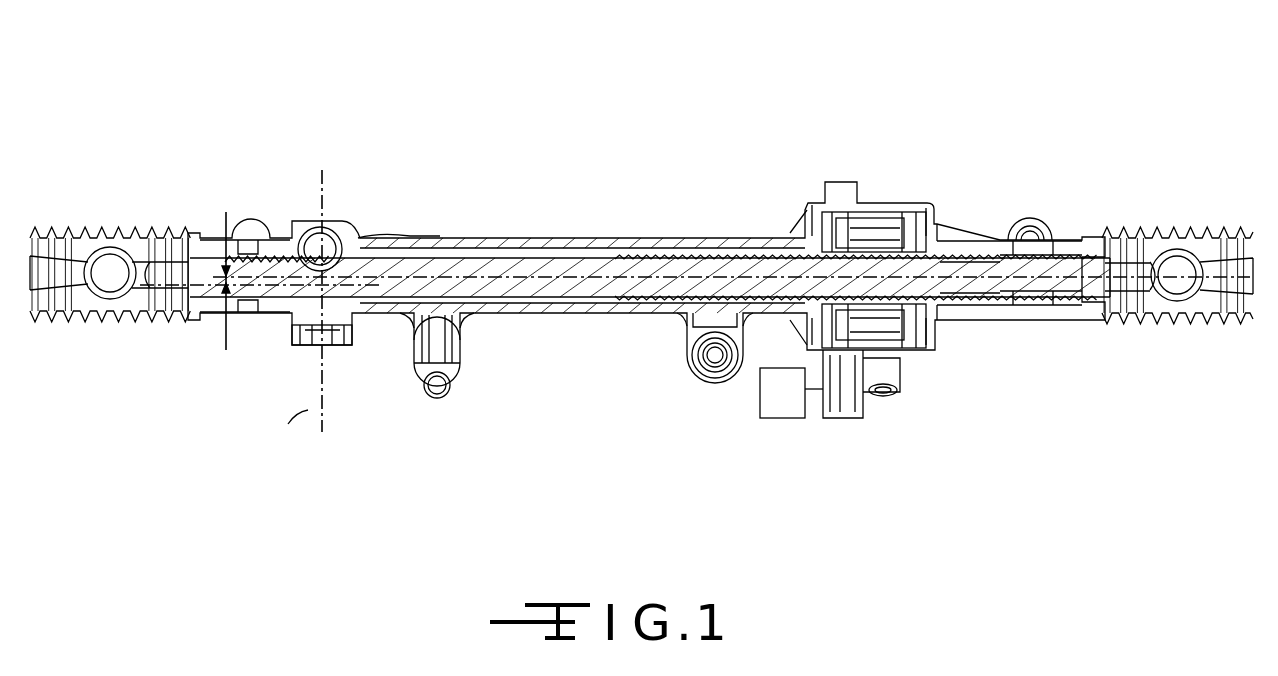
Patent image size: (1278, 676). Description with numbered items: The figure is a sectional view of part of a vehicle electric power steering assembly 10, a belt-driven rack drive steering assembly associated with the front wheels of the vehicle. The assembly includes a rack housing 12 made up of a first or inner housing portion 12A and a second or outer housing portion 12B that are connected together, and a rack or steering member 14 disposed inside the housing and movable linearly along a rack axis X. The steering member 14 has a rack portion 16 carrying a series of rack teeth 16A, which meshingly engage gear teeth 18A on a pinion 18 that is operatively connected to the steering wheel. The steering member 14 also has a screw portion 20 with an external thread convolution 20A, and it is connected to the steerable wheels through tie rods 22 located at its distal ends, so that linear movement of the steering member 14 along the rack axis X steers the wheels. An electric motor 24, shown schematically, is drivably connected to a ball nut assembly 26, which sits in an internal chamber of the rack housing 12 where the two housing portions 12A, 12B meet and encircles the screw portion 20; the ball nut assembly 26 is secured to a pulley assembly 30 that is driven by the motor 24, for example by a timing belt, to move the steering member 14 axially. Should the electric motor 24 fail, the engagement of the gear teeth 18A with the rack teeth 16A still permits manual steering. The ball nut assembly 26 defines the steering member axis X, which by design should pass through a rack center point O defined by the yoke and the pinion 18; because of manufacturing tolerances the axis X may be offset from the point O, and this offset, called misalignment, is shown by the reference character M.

The vehicle electric power steering assembly 10 is at (521, 122).
The rack housing 12 is at (500, 234).
The first housing portion 12A is at (590, 240).
The second housing portion 12B is at (915, 205).
The steering member 14 is at (520, 302).
The rack portion 16 is at (272, 280).
The rack teeth 16A is at (410, 244).
The pinion 18 is at (318, 240).
The gear teeth 18A is at (316, 300).
The screw portion 20 is at (1000, 287).
The external thread convolution 20A is at (950, 302).
The tie rods 22 is at (112, 262).
The electric motor 24 is at (783, 420).
The ball nut assembly 26 is at (875, 240).
The pulley assembly 30 is at (887, 340).
The misalignment M is at (218, 302).
The rack center point O is at (326, 262).
The rack axis X is at (596, 282).